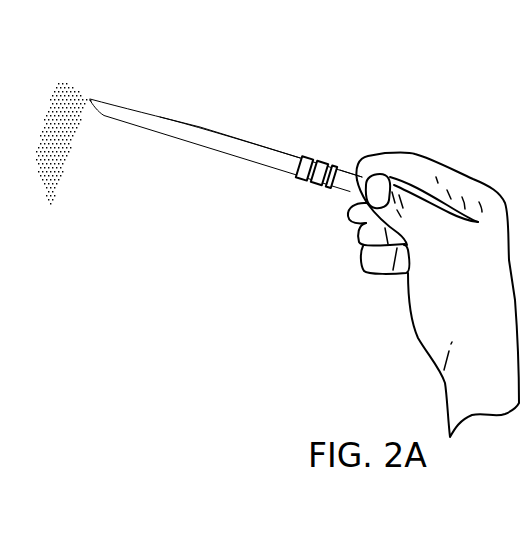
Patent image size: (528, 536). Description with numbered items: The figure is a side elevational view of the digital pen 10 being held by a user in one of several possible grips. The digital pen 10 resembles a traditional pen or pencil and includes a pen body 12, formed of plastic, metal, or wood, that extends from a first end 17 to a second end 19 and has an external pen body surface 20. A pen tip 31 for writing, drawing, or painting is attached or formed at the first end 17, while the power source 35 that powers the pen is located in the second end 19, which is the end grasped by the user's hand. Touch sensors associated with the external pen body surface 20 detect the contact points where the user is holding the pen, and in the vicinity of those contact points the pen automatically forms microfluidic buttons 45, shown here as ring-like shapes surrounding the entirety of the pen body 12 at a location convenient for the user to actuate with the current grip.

The digital pen 10 is at (226, 173).
The pen body 12 is at (252, 160).
The first end 17 is at (114, 84).
The second end 19 is at (351, 152).
The external pen body surface 20 is at (221, 124).
The pen tip 31 is at (91, 101).
The power source 35 is at (356, 186).
The microfluidic buttons 45 is at (335, 166).